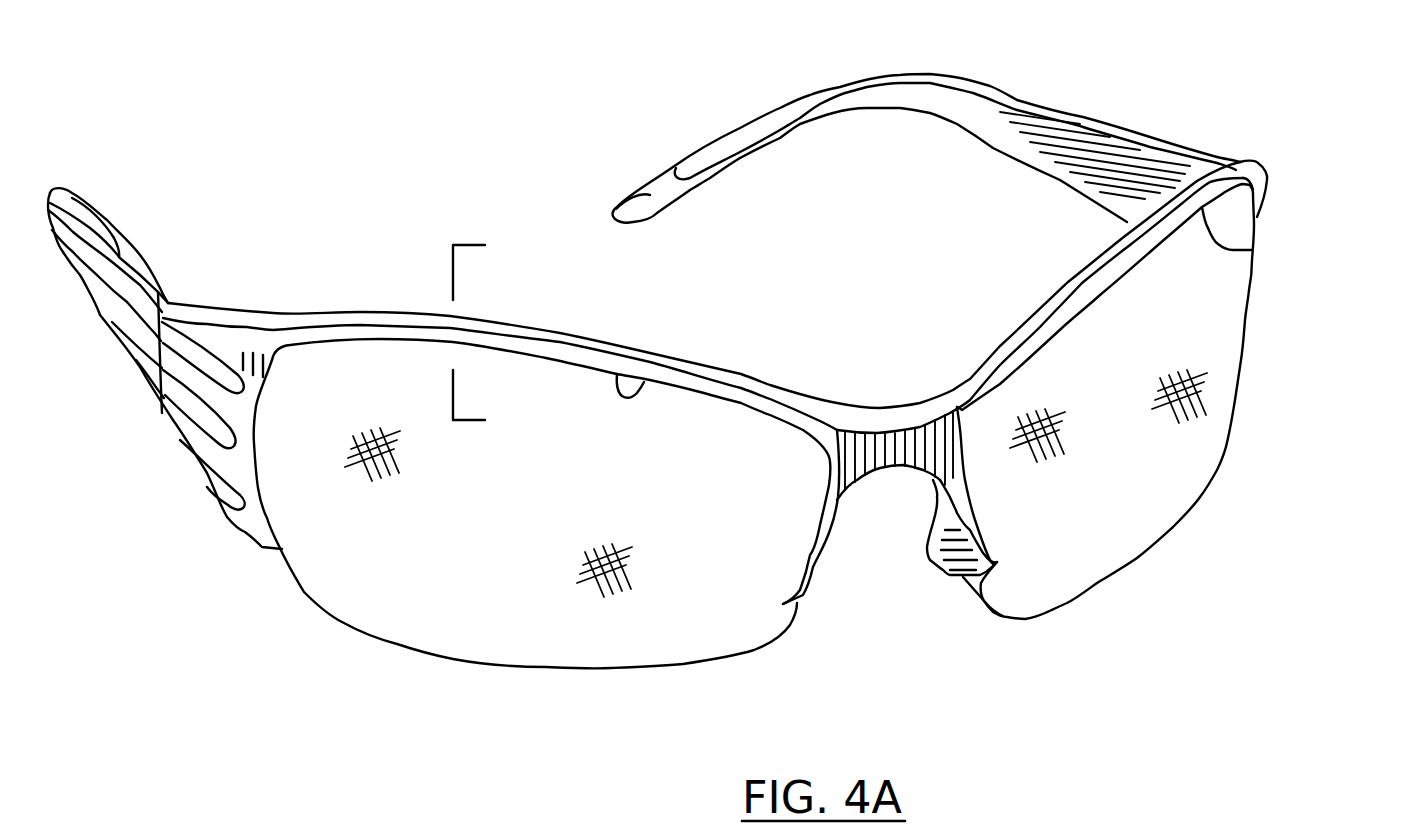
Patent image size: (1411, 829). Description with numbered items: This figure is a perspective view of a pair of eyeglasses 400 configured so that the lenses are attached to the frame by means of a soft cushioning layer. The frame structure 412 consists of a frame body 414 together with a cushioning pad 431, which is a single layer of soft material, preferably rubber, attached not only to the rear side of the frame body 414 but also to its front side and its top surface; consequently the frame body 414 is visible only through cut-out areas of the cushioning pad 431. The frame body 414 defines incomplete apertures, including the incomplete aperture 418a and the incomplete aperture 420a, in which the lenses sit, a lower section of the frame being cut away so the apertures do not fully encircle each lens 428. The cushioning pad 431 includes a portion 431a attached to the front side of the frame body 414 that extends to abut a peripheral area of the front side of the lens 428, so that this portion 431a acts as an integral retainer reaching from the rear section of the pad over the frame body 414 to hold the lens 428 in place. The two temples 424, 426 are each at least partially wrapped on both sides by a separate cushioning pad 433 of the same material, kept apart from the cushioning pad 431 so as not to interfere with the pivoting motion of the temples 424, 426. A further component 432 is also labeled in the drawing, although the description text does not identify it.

The eyeglasses 400 is at (417, 250).
The frame structure 412 is at (247, 327).
The frame body 414 is at (190, 409).
The incomplete aperture 418a is at (636, 383).
The incomplete aperture 420a is at (1252, 250).
The temple 424 is at (127, 263).
The temple 426 is at (645, 203).
The lens 428 is at (397, 562).
The cushioning pad 431 is at (743, 374).
The portion of cushioning pad 431a is at (563, 343).
The nose piece 432 is at (940, 565).
The cushioning pad 433 is at (158, 305).